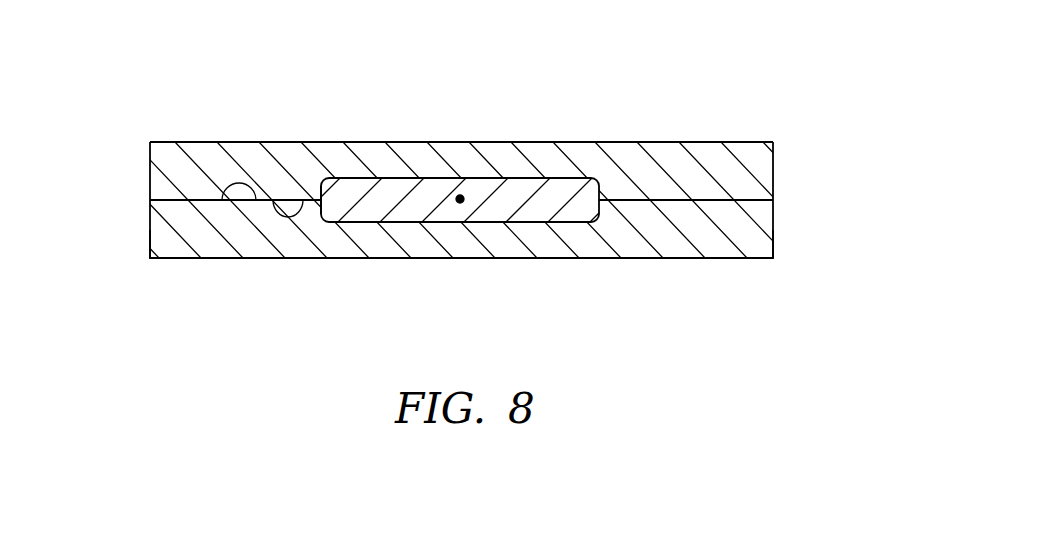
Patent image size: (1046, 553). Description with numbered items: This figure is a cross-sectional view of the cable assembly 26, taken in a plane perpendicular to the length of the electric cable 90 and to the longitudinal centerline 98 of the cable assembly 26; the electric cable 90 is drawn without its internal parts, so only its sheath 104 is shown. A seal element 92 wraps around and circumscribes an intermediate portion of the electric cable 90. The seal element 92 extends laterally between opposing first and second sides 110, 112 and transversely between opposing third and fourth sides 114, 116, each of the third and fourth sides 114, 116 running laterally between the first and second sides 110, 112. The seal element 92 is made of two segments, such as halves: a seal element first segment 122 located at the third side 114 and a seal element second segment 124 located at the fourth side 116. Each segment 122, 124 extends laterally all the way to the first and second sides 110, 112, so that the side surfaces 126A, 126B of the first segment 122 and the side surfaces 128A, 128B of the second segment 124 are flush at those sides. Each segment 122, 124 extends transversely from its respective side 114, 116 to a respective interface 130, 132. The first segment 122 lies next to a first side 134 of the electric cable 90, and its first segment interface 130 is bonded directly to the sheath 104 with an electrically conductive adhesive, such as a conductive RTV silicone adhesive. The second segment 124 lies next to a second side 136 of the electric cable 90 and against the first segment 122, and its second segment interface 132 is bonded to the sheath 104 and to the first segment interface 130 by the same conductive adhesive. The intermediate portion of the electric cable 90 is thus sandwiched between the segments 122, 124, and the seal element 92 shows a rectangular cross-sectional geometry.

The cable assembly 26 is at (462, 180).
The electric cable 90 is at (465, 200).
The seal element 92 is at (677, 142).
The longitudinal centerline 98 is at (460, 195).
The sheath 104 is at (563, 177).
The first side 110 is at (150, 247).
The second side 112 is at (773, 250).
The third side 114 is at (197, 258).
The fourth side 116 is at (215, 142).
The seal element first segment 122 is at (774, 235).
The seal element second segment 124 is at (774, 173).
The side surface 126A is at (150, 215).
The side surface 126B is at (150, 167).
The side surface 128A is at (773, 217).
The side surface 128B is at (773, 155).
The first segment interface 130 is at (256, 200).
The second segment interface 132 is at (303, 200).
The first side of the electric cable 134 is at (450, 223).
The second side of the electric cable 136 is at (406, 177).